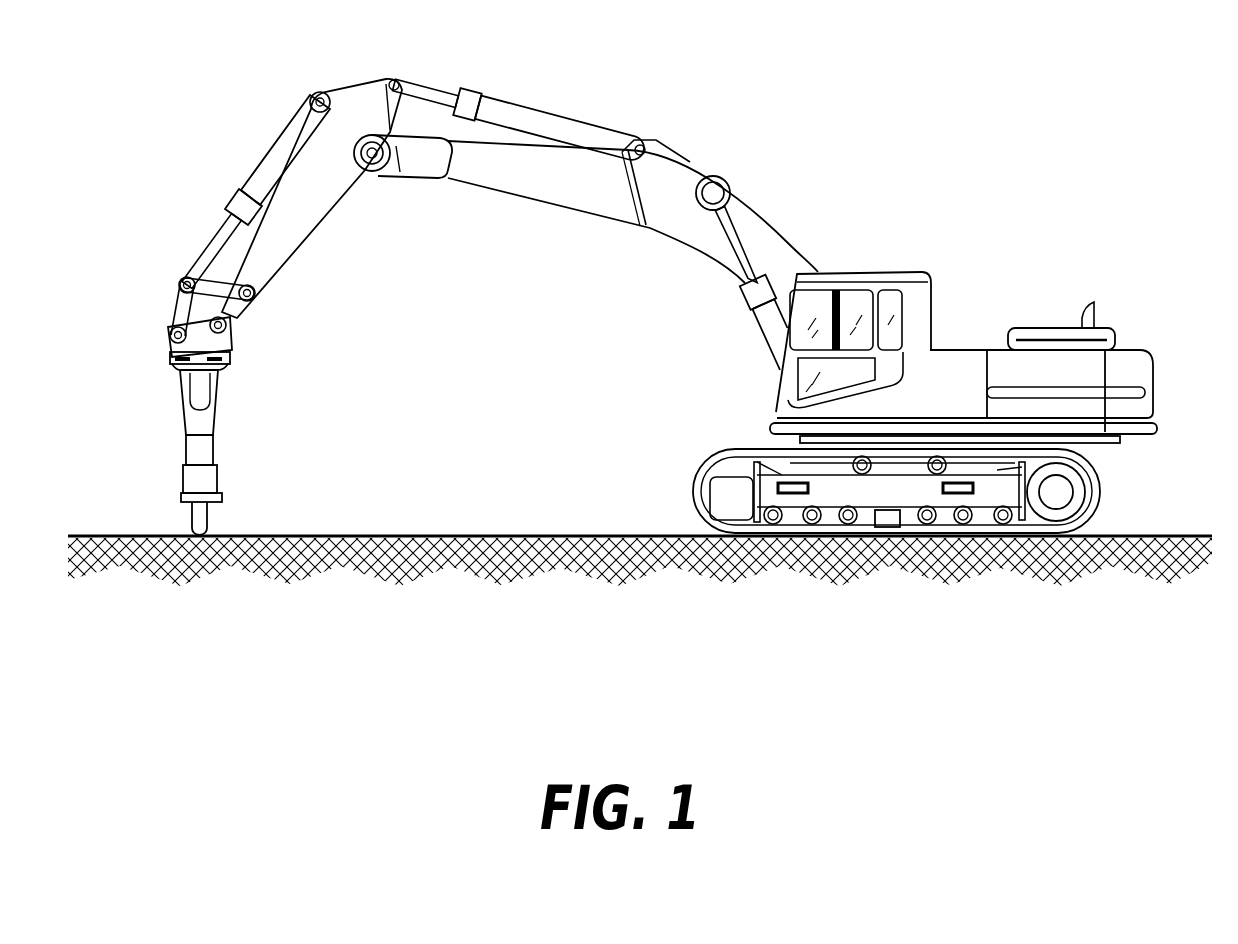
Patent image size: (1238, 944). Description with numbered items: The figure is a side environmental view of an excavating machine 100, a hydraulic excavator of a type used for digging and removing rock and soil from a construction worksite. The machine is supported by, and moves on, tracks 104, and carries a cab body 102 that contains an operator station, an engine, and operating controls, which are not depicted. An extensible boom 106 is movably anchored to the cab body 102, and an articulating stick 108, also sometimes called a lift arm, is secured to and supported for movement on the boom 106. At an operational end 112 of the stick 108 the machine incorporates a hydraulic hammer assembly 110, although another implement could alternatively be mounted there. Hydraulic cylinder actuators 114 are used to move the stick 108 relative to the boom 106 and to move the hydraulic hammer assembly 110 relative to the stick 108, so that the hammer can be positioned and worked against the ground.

The excavating machine 100 is at (1068, 218).
The cab body 102 is at (860, 274).
The tracks 104 is at (1093, 492).
The extensible boom 106 is at (573, 194).
The articulating stick 108 is at (317, 210).
The hydraulic hammer assembly 110 is at (95, 467).
The operational end 112 is at (232, 303).
The hydraulic cylinder actuators 114 is at (265, 164).